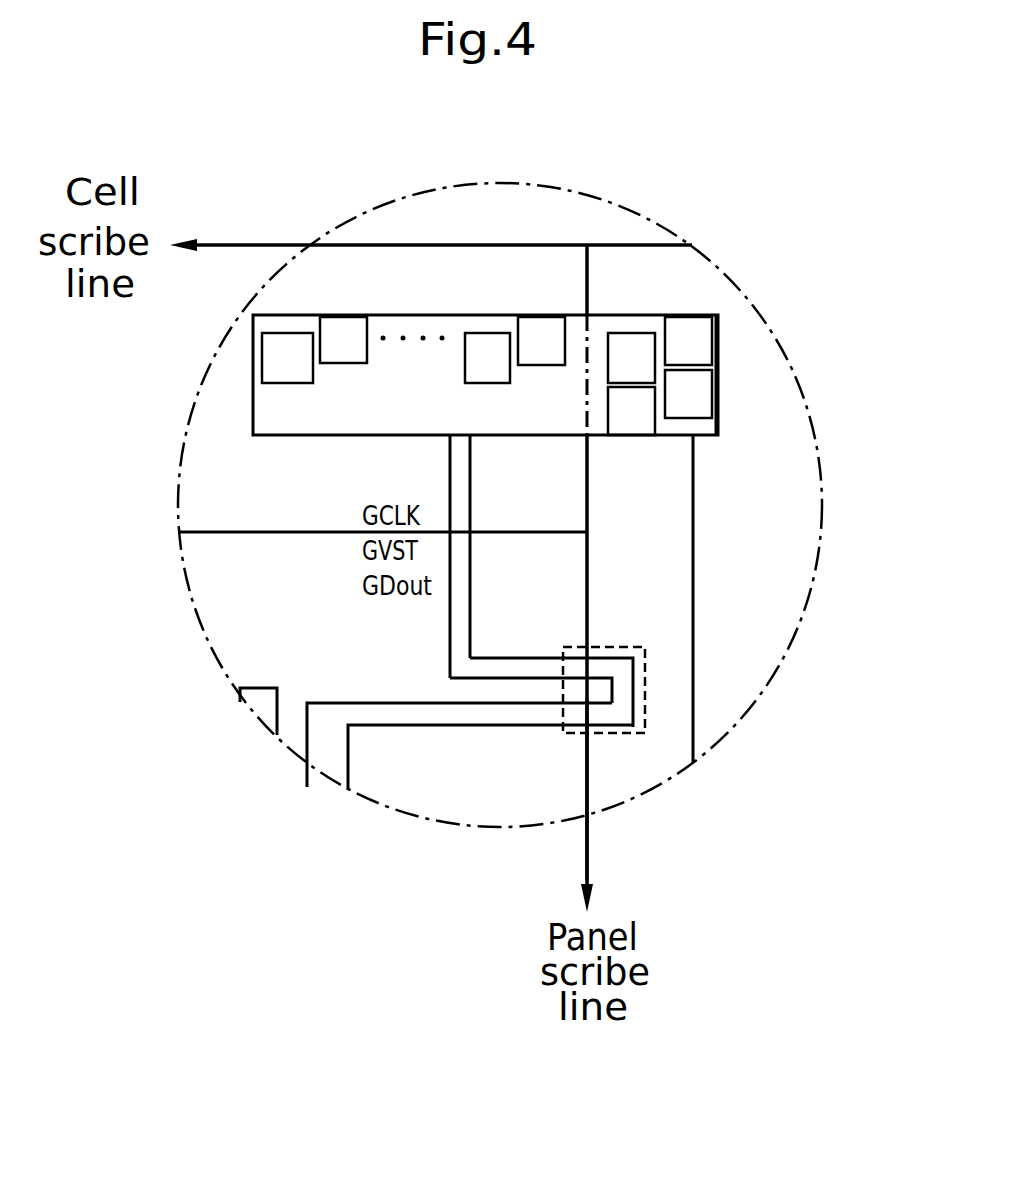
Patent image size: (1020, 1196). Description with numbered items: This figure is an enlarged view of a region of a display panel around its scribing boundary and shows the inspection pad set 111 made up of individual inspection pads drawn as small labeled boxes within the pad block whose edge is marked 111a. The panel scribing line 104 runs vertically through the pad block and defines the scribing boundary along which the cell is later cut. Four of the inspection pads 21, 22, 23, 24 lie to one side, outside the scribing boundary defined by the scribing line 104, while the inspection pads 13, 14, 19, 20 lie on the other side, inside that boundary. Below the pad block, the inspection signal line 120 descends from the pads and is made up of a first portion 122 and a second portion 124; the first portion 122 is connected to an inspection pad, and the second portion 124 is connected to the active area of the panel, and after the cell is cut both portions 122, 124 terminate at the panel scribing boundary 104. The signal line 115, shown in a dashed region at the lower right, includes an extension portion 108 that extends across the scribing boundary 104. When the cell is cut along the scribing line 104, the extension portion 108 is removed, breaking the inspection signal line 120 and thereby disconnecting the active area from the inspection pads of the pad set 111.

The inspection pad 13 is at (287, 358).
The inspection pad 14 is at (343, 340).
The inspection pad 19 is at (487, 358).
The inspection pad 20 is at (541, 341).
The inspection pad 21 is at (631, 411).
The inspection pad 22 is at (631, 358).
The inspection pad 23 is at (688, 341).
The inspection pad 24 is at (688, 394).
The scribing line 104 is at (590, 780).
The extension portion 108 is at (645, 707).
The inspection pad set 111 is at (720, 377).
The edge of pad block 111a is at (690, 315).
The signal line 115 is at (640, 667).
The inspection signal line 120 is at (485, 584).
The first portion 122 is at (471, 657).
The second portion 124 is at (550, 725).